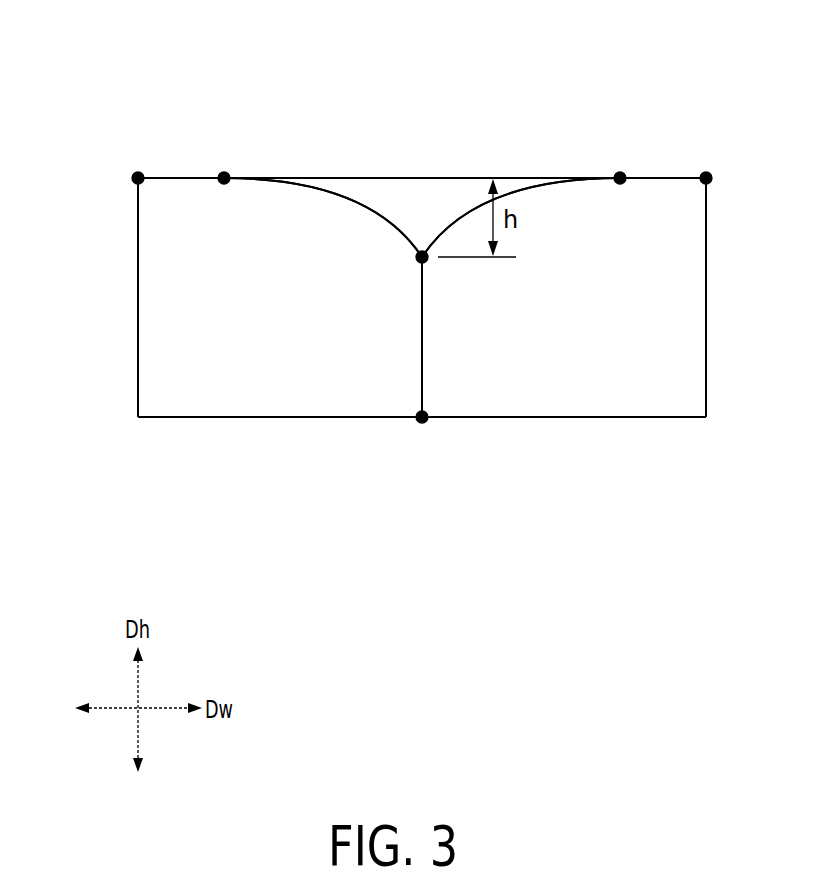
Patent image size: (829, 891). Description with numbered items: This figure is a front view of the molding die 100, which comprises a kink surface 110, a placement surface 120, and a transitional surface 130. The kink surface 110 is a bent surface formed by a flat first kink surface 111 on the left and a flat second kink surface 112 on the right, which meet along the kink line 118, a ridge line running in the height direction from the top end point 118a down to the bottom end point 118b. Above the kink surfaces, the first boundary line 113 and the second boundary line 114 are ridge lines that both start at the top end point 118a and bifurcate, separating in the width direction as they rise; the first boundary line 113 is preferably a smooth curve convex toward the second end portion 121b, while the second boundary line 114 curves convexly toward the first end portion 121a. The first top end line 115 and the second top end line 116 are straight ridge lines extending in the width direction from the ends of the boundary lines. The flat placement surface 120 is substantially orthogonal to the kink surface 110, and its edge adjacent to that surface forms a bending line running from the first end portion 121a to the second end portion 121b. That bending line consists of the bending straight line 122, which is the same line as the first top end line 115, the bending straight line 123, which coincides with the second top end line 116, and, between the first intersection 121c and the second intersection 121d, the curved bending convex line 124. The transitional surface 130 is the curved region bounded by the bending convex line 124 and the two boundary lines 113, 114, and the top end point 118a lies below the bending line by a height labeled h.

The molding die 100 is at (86, 203).
The kink surface 110 is at (482, 397).
The first kink surface 111 is at (178, 398).
The second kink surface 112 is at (667, 398).
The first boundary line 113 is at (307, 190).
The second boundary line 114 is at (530, 186).
The first top end line 115 is at (170, 181).
The second top end line 116 is at (675, 181).
The kink line 118 is at (420, 340).
The top end point 118a is at (410, 262).
The bottom end point 118b is at (415, 414).
The placement surface 120 is at (548, 210).
The first end portion 121a is at (138, 172).
The second end portion 121b is at (706, 172).
The first intersection 121c is at (225, 172).
The second intersection 121d is at (620, 172).
The bending straight line 122 is at (177, 176).
The bending straight line 123 is at (663, 176).
The bending convex line 124 is at (355, 175).
The transitional surface 130 is at (437, 203).